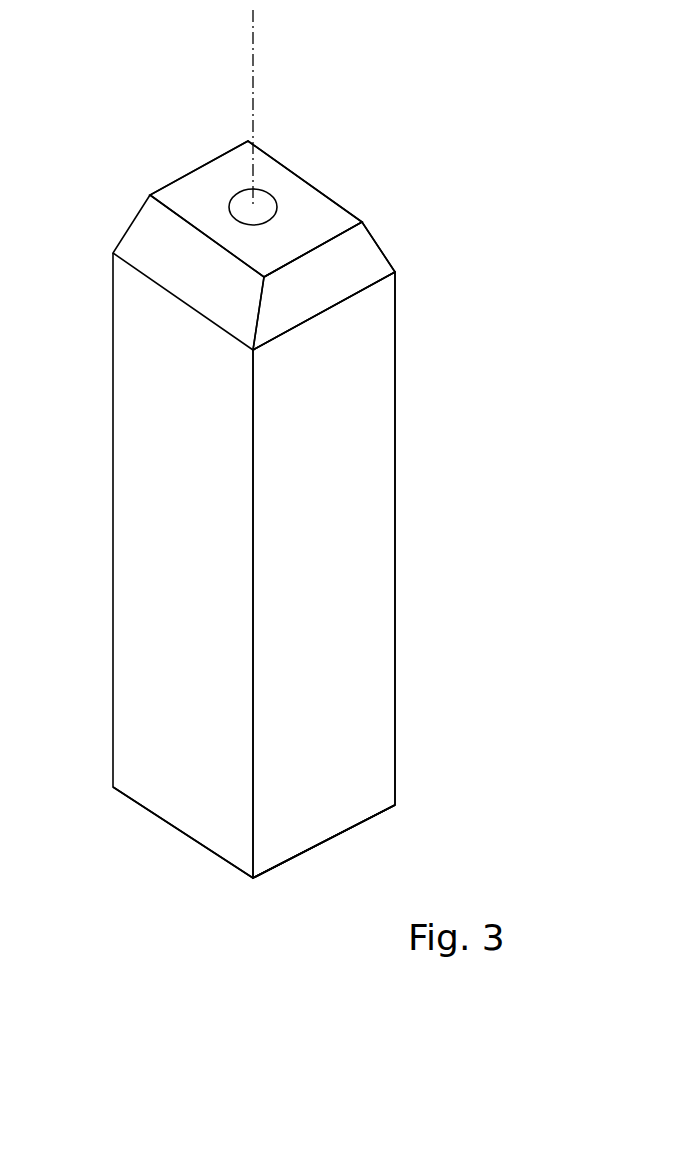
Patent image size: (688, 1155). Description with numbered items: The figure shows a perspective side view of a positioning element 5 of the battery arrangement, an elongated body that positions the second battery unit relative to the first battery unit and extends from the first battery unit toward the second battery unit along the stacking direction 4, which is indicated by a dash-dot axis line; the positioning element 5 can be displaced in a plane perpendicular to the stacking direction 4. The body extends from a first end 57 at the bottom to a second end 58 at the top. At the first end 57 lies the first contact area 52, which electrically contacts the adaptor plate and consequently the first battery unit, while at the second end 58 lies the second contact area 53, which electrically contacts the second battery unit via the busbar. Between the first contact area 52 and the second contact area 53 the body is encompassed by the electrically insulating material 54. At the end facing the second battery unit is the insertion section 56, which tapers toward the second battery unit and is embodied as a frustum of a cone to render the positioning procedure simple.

The stacking direction 4 is at (253, 68).
The positioning element 5 is at (83, 145).
The first contact area 52 is at (353, 827).
The second contact area 53 is at (318, 212).
The electrically insulating material 54 is at (360, 558).
The insertion section 56 is at (360, 260).
The first end 57 is at (290, 893).
The second end 58 is at (318, 140).